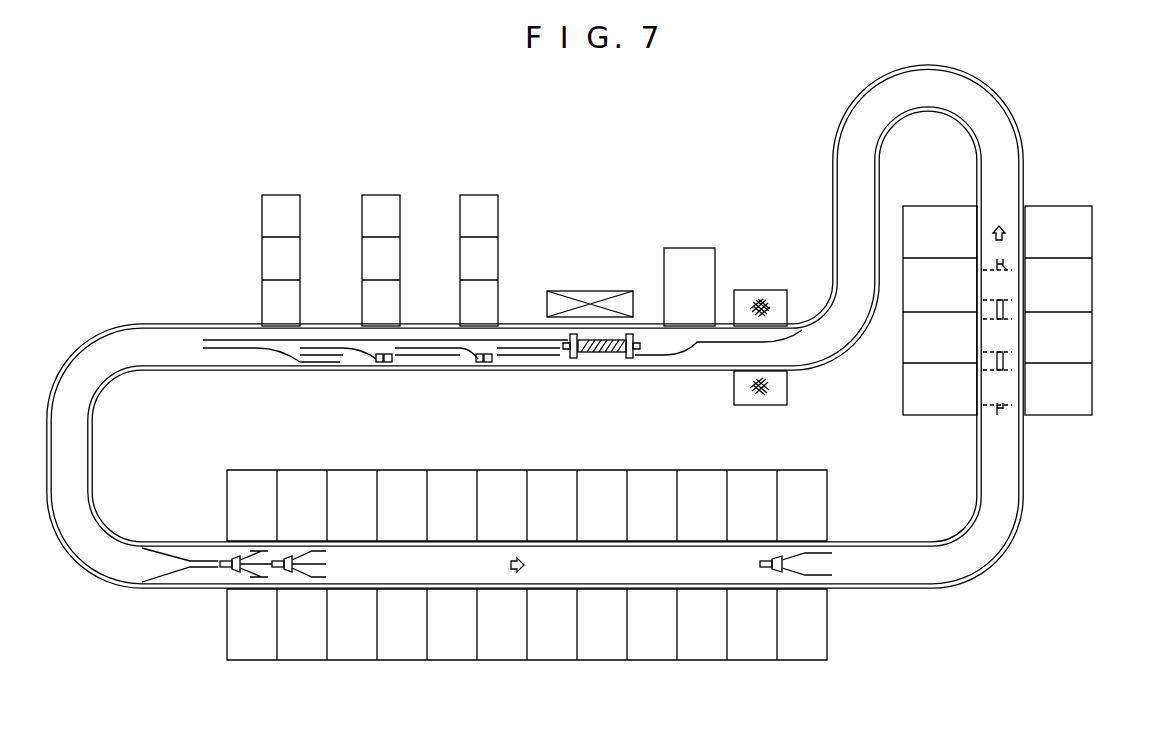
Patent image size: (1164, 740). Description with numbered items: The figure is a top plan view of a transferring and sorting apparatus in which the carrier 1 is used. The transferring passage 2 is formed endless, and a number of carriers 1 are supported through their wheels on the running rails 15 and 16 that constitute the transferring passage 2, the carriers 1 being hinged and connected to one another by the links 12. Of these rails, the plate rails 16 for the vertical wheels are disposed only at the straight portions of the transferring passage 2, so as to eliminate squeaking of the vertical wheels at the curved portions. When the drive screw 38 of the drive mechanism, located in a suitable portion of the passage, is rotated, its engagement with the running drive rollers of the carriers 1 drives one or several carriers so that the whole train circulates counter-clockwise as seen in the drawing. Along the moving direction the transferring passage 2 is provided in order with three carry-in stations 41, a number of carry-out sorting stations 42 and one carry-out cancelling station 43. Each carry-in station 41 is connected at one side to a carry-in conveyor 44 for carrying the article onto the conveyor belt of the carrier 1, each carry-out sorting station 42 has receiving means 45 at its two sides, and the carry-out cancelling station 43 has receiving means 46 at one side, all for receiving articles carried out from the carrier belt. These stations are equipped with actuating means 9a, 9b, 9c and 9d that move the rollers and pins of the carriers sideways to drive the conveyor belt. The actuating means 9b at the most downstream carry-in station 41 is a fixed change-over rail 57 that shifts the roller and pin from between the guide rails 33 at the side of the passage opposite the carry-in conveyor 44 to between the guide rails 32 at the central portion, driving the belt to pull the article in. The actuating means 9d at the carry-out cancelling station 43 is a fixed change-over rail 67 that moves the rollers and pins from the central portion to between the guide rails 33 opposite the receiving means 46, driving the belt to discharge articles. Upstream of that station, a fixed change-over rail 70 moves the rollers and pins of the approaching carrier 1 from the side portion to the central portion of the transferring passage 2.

The carrier 1 is at (1010, 330).
The transferring passage 2 is at (535, 343).
The actuating means 9a is at (383, 380).
The actuating means 9b is at (298, 380).
The actuating means 9c is at (248, 532).
The actuating means 9d is at (686, 380).
The link 12 is at (996, 362).
The running rail 15 is at (88, 562).
The plate rail 16 is at (152, 363).
The guide rail 32 is at (207, 348).
The guide rail 33 is at (344, 360).
The drive screw 38 is at (598, 352).
The carry-in station 41 is at (250, 291).
The carry-out sorting station 42 is at (962, 193).
The carry-out cancelling station 43 is at (746, 284).
The carry-in conveyor 44 is at (478, 195).
The receiving means 45 is at (262, 472).
The receiving means 46 is at (697, 253).
The fixed change-over rail 57 is at (276, 352).
The fixed change-over rail 67 is at (693, 347).
The fixed change-over rail 70 is at (777, 336).